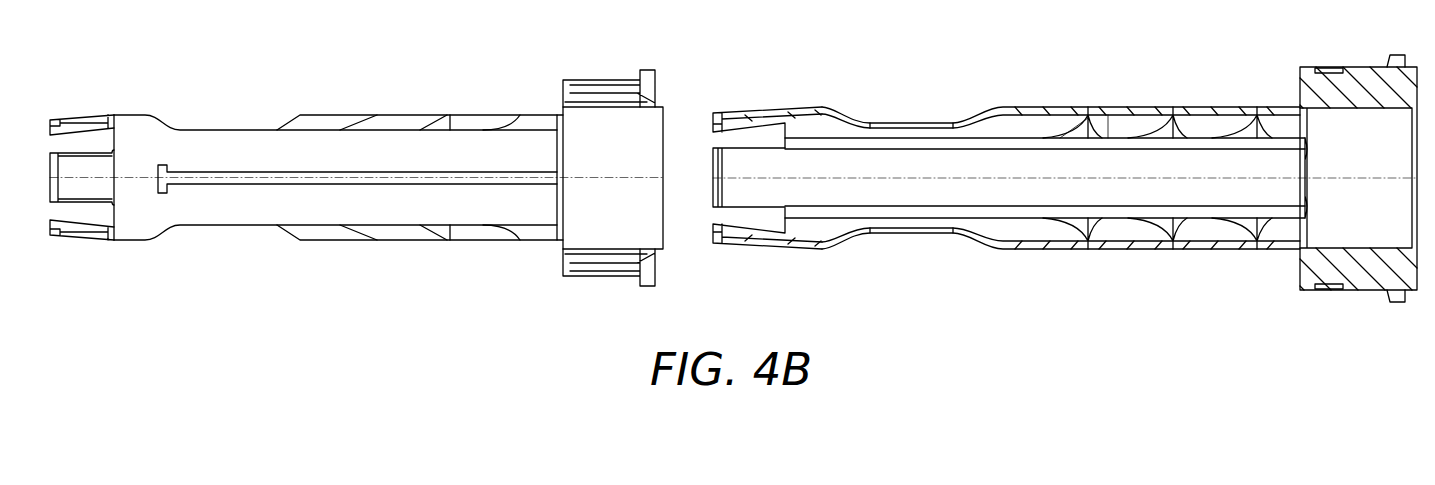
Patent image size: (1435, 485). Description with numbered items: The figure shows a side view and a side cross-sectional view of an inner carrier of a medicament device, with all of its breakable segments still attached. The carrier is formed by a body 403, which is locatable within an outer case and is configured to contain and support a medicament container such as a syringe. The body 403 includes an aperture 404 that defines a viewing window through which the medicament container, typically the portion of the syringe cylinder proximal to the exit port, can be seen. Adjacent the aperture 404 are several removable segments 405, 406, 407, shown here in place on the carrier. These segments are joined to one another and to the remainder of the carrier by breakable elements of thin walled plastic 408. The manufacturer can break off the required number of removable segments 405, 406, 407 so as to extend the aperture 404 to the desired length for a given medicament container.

The body 403 is at (127, 239).
The aperture 404 is at (217, 128).
The removable segment 405 is at (337, 116).
The removable segment 406 is at (405, 116).
The removable segment 407 is at (475, 116).
The thin walled plastic 408 is at (1090, 107).